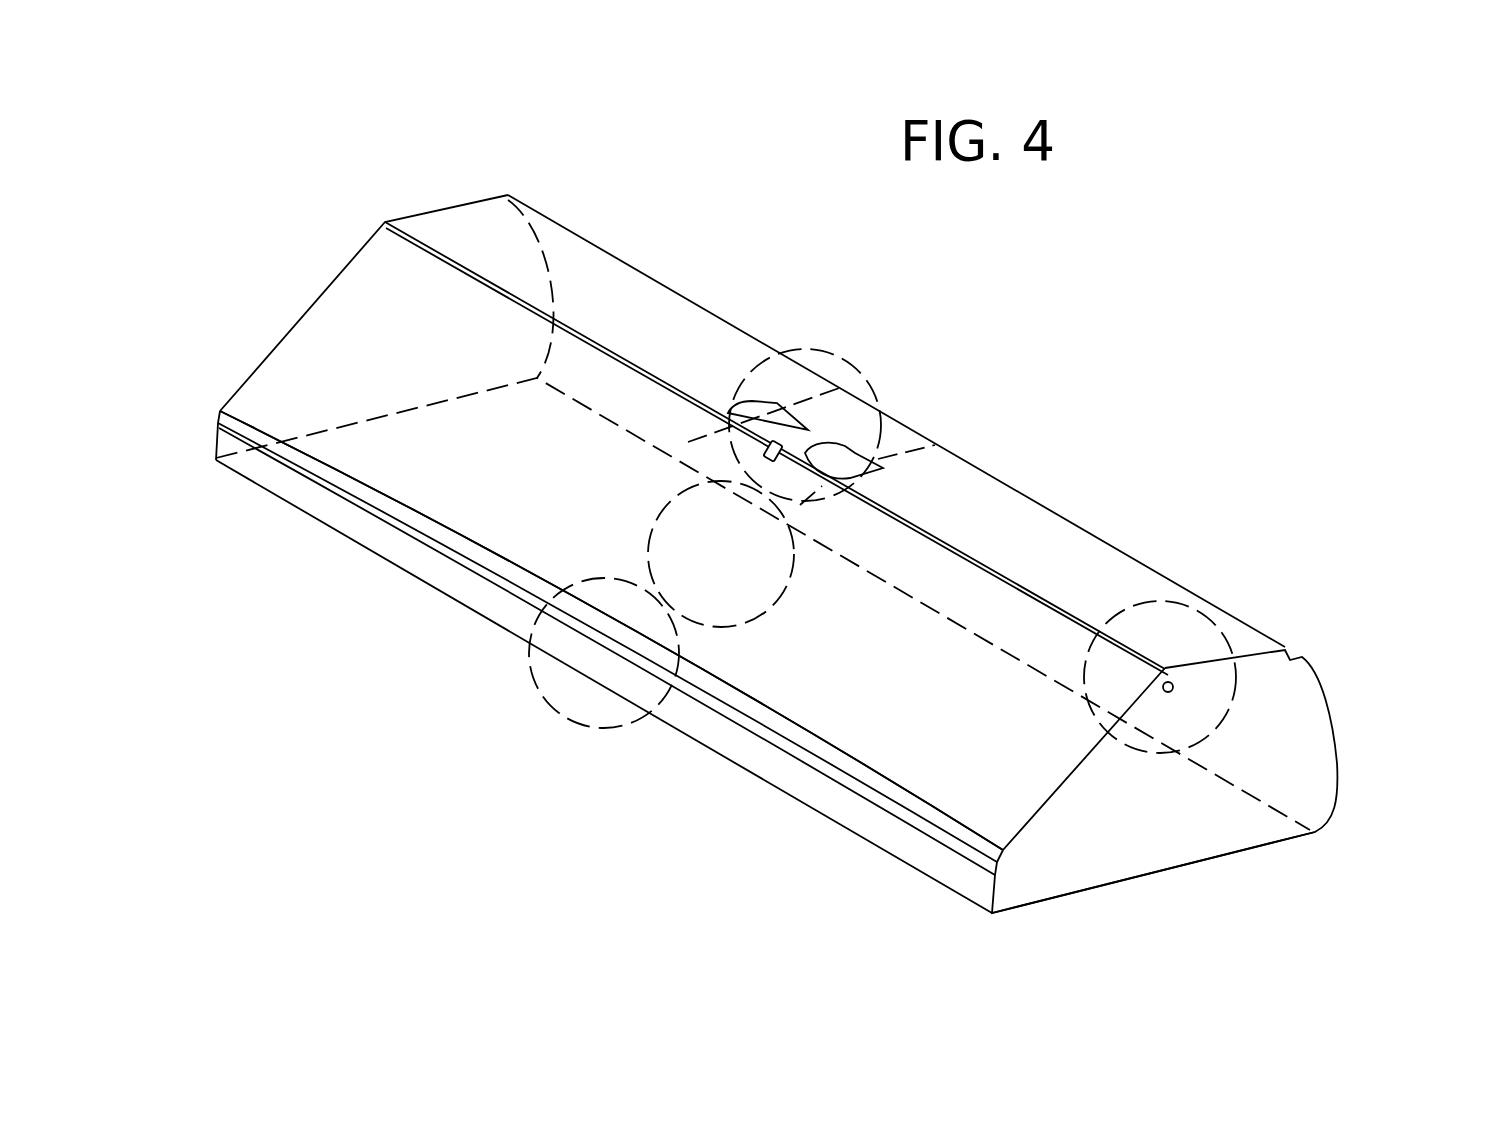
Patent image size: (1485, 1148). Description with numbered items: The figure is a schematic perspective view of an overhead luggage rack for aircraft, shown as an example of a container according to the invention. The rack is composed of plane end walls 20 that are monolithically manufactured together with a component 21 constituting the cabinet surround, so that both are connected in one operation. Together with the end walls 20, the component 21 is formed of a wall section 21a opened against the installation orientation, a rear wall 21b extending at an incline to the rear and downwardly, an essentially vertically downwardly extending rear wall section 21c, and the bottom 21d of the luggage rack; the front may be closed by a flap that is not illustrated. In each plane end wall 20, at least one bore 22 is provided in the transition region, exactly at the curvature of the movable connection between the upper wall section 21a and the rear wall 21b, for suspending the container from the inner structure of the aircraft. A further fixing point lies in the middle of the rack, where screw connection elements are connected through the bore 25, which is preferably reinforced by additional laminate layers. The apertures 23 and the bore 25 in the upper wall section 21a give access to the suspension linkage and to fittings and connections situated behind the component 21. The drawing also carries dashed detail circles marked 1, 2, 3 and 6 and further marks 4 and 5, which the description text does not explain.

The detail region 1 is at (1227, 637).
The detail region 2 is at (743, 627).
The detail region 3 is at (615, 728).
The strip 4 is at (925, 828).
The cavity 5 is at (884, 470).
The detail region 6 is at (873, 397).
The plane end walls 20 is at (1248, 737).
The component constituting the cabinet surround 21 is at (635, 265).
The wall section opened against the installation orientation 21a is at (572, 275).
The rear wall 21b is at (422, 445).
The rear wall section 21c is at (460, 585).
The bottom 21d is at (1202, 860).
The bore 22 is at (1171, 681).
The apertures 23 is at (847, 460).
The bore 25 is at (775, 442).